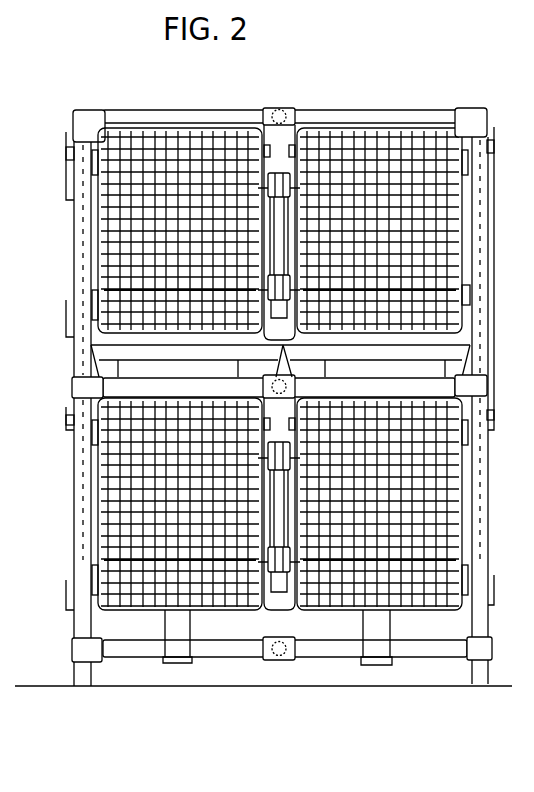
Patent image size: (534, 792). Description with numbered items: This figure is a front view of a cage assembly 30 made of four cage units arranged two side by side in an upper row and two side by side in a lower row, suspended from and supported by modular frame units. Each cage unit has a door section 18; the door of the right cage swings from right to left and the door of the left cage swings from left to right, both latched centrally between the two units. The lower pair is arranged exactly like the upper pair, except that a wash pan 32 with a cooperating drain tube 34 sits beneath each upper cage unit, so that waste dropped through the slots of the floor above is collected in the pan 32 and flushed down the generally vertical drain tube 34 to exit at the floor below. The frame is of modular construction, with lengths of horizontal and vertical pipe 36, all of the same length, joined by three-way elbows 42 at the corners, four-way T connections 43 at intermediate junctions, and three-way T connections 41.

The door section 18 is at (130, 214).
The cage assembly 30 is at (283, 99).
The wash pan 32 is at (113, 355).
The drain tube 34 is at (178, 623).
The pipe 36 is at (347, 110).
The 3-way T connection 41 is at (263, 110).
The 3-way elbow 42 is at (108, 79).
The 4-way T connection 43 is at (78, 385).